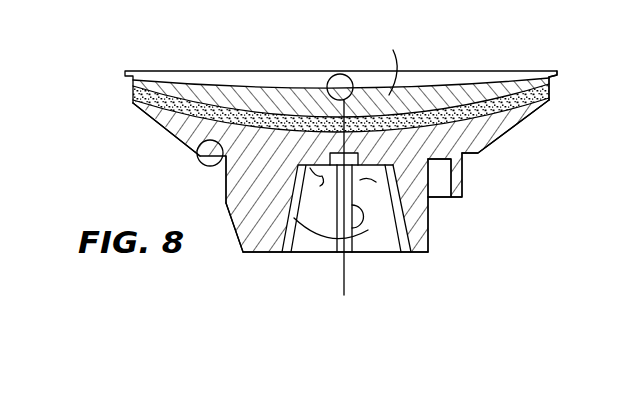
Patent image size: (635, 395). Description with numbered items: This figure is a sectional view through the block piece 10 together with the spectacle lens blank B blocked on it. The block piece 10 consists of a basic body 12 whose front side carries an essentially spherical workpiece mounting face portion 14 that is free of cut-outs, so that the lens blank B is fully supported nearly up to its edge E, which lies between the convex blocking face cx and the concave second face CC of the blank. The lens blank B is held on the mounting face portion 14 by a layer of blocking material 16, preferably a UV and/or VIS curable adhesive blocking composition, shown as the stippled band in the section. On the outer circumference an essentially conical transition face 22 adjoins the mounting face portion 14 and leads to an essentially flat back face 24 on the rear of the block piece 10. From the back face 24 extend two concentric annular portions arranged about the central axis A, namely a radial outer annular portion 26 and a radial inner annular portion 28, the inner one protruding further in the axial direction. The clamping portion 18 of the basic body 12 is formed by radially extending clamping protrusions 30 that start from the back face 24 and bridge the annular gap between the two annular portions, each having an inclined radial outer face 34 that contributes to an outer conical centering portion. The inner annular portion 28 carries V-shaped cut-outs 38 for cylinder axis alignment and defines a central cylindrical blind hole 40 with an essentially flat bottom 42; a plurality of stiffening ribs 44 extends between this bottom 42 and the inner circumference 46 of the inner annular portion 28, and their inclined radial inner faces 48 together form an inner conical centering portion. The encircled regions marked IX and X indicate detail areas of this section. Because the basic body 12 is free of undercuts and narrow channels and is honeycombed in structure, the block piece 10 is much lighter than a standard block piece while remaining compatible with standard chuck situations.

The block piece 10 is at (507, 139).
The basic body 12 is at (184, 133).
The workpiece mounting face portion 14 is at (425, 113).
The blocking material 16 is at (453, 112).
The clamping portion 18 is at (226, 230).
The transition face 22 is at (540, 118).
The back face 24 is at (479, 160).
The radial outer annular portion 26 is at (463, 200).
The radial inner annular portion 28 is at (430, 254).
The clamping protrusion 30 is at (261, 257).
The radial outer face 34 is at (225, 214).
The cut-out 38 is at (398, 232).
The central cylindrical blind hole 40 is at (307, 244).
The bottom 42 is at (329, 153).
The stiffening rib 44 is at (345, 173).
The inner circumference 46 is at (411, 206).
The radial inner face 48 is at (383, 175).
The central axis A is at (346, 279).
The spectacle lens blank B is at (384, 66).
The edge E is at (558, 74).
The detail X is at (341, 74).
The detail IX is at (206, 166).
The second face CC is at (167, 72).
The blocking face cx is at (150, 122).